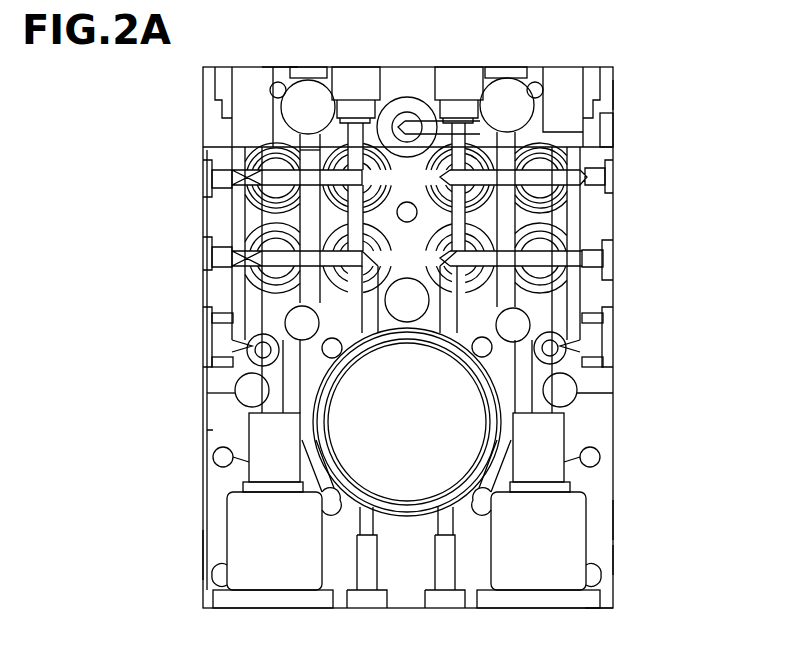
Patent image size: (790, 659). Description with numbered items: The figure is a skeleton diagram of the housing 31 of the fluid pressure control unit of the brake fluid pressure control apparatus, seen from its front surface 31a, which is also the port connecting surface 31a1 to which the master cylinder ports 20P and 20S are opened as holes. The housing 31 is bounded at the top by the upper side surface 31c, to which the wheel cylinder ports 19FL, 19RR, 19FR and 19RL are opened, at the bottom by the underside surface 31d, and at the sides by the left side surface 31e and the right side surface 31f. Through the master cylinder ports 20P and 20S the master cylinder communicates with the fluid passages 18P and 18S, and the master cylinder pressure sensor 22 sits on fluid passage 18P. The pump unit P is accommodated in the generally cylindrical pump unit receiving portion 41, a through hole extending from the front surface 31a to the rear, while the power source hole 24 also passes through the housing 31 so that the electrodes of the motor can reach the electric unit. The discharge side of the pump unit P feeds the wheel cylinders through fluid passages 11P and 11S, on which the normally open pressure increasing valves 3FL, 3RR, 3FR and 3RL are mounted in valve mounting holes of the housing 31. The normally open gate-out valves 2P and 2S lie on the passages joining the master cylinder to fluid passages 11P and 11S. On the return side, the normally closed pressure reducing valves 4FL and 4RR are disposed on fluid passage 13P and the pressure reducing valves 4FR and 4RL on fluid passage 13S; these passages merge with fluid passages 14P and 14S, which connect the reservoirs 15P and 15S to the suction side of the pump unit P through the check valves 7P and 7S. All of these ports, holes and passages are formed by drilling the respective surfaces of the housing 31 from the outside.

The housing 31 is at (641, 69).
The front surface 31a is at (600, 518).
The port connecting surface 31a1 is at (606, 90).
The upper side surface 31c is at (278, 67).
The underside surface 31d is at (606, 612).
The left side surface 31e is at (202, 556).
The right side surface 31f is at (612, 552).
The wheel cylinder port 19RL is at (221, 88).
The wheel cylinder port 19RR is at (590, 80).
The wheel cylinder port 19FR is at (358, 85).
The wheel cylinder port 19FL is at (458, 85).
The master cylinder port 20S is at (312, 92).
The master cylinder port 20P is at (505, 92).
The master cylinder pressure sensor 22 is at (407, 100).
The fluid passage 18S is at (307, 153).
The fluid passage 18P is at (509, 147).
The pressure increasing valve 3RL is at (300, 190).
The pressure increasing valve 3RR is at (548, 160).
The pressure increasing valve 3FR is at (335, 220).
The pressure increasing valve 3FL is at (472, 205).
The pressure reducing valve 4RL is at (300, 240).
The pressure reducing valve 4RR is at (540, 262).
The pressure reducing valve 4FR is at (338, 262).
The pressure reducing valve 4FL is at (482, 240).
The fluid passage 13S is at (298, 333).
The fluid passage 13P is at (452, 300).
The fluid passage 11S is at (256, 350).
The fluid passage 11P is at (558, 350).
The gate-out valve 2S is at (242, 384).
The gate-out valve 2P is at (570, 380).
The check valve 7S is at (208, 430).
The check valve 7P is at (595, 425).
The fluid passage 14S is at (312, 470).
The fluid passage 14P is at (502, 470).
The reservoir 15S is at (255, 608).
The reservoir 15P is at (512, 608).
The power source hole 24 is at (415, 328).
The pump unit receiving portion 41 is at (360, 500).
The pump unit P is at (421, 528).